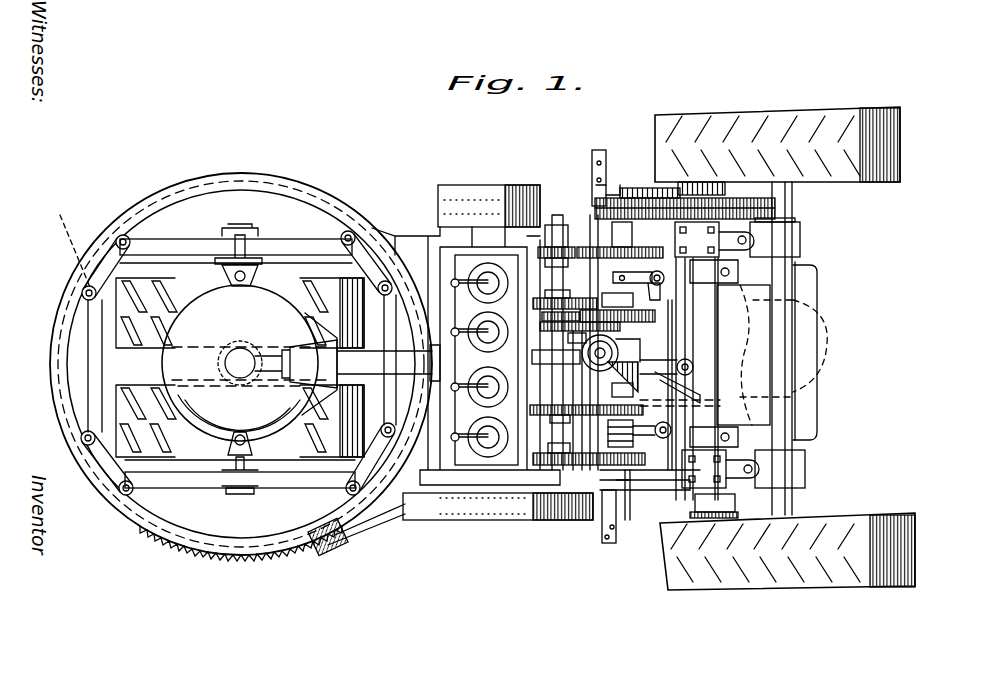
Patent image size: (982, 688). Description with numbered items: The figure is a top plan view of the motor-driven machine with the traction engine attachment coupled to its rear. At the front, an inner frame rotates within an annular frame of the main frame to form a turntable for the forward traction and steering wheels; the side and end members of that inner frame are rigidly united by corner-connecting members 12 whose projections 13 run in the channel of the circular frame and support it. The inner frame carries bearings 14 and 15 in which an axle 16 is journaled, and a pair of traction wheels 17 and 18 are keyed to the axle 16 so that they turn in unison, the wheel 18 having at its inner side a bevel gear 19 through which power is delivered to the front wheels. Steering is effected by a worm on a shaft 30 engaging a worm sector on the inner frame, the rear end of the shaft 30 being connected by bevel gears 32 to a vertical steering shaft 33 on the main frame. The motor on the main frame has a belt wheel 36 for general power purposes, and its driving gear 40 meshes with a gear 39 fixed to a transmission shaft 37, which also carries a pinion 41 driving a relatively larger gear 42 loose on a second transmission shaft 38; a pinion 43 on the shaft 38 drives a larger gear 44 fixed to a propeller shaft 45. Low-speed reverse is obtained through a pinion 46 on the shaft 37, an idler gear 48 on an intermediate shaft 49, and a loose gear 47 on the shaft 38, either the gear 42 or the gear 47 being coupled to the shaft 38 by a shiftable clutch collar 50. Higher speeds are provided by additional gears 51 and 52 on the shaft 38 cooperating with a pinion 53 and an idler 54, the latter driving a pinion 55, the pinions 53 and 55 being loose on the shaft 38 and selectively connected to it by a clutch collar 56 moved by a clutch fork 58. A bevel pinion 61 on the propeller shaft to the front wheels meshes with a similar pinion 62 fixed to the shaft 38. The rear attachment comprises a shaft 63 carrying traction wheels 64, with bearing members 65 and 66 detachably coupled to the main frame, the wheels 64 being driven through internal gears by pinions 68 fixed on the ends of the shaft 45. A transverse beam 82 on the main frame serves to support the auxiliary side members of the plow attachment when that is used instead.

The corner-connecting members 12 is at (100, 245).
The projections 13 is at (75, 248).
The bearing 14 is at (252, 236).
The bearing 15 is at (290, 498).
The axle 16 is at (232, 232).
The traction wheel 17 is at (130, 298).
The traction wheel 18 is at (160, 420).
The bevel gear 19 is at (190, 372).
The shaft 30 is at (360, 532).
The bevel gears 32 is at (679, 387).
The vertical steering shaft 33 is at (684, 385).
The belt wheel 36 is at (462, 185).
The transmission shaft 37 is at (530, 450).
The transmission shaft 38 is at (640, 478).
The gear 39 is at (616, 342).
The driving gear 40 is at (455, 283).
The pinion 41 is at (552, 225).
The gear 42 is at (570, 247).
The pinion 43 is at (612, 205).
The gear 44 is at (775, 205).
The propeller shaft 45 is at (751, 348).
The pinion 46 is at (547, 298).
The gear 47 is at (618, 317).
The idler gear 48 is at (545, 333).
The intermediate shaft 49 is at (587, 435).
The clutch collar 50 is at (662, 288).
The gear 51 is at (578, 400).
The gear 52 is at (562, 520).
The pinion 53 is at (693, 403).
The idler 54 is at (598, 490).
The pinion 55 is at (628, 520).
The clutch collar 56 is at (636, 445).
The clutch fork 58 is at (664, 431).
The bevel pinion 61 is at (614, 365).
The bevel pinion 62 is at (694, 362).
The shaft 63 is at (800, 415).
The traction wheels 64 is at (900, 150).
The bearing member 65 is at (800, 240).
The bearing member 66 is at (805, 460).
The pinions 68 is at (735, 505).
The transverse beam 82 is at (620, 530).